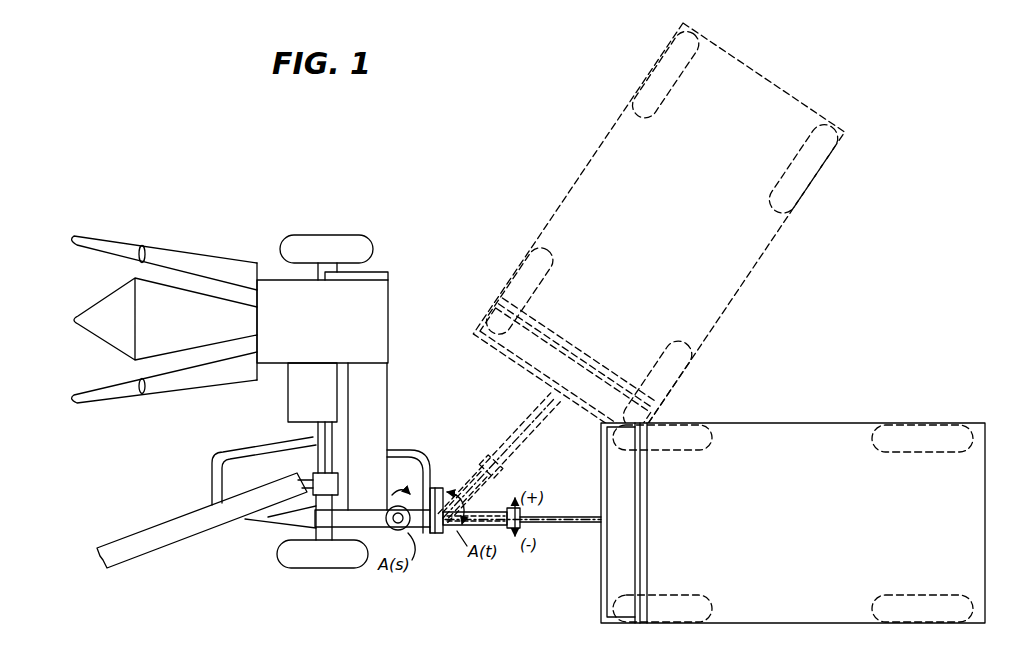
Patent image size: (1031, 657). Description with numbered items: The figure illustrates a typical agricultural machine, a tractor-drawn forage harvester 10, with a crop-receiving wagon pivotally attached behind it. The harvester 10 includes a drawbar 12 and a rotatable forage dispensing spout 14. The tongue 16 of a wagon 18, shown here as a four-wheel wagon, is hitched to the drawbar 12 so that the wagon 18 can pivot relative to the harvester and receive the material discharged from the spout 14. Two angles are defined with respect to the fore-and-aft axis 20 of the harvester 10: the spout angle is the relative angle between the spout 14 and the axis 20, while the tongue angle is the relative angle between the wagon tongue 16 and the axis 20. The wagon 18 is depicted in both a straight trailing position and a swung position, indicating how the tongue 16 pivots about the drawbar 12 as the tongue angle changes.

The forage harvester 10 is at (301, 172).
The drawbar 12 is at (438, 546).
The forage dispensing spout 14 is at (500, 510).
The tongue 16 is at (568, 525).
The wagon 18 is at (717, 412).
The fore-and-aft axis 20 is at (485, 513).